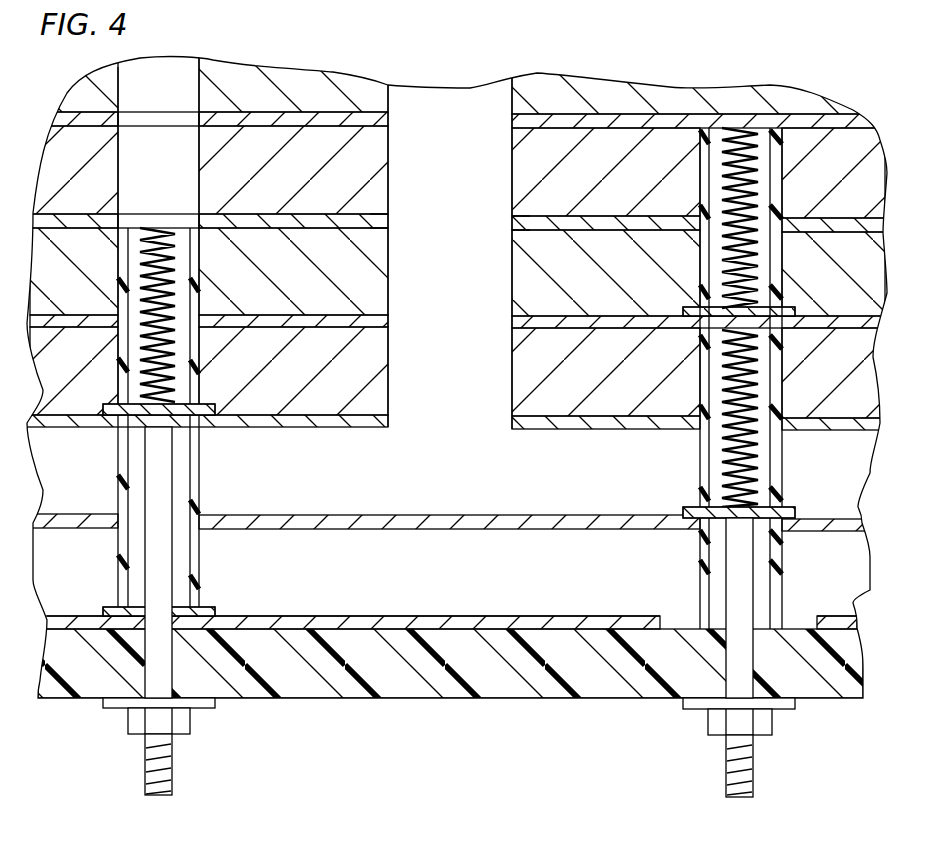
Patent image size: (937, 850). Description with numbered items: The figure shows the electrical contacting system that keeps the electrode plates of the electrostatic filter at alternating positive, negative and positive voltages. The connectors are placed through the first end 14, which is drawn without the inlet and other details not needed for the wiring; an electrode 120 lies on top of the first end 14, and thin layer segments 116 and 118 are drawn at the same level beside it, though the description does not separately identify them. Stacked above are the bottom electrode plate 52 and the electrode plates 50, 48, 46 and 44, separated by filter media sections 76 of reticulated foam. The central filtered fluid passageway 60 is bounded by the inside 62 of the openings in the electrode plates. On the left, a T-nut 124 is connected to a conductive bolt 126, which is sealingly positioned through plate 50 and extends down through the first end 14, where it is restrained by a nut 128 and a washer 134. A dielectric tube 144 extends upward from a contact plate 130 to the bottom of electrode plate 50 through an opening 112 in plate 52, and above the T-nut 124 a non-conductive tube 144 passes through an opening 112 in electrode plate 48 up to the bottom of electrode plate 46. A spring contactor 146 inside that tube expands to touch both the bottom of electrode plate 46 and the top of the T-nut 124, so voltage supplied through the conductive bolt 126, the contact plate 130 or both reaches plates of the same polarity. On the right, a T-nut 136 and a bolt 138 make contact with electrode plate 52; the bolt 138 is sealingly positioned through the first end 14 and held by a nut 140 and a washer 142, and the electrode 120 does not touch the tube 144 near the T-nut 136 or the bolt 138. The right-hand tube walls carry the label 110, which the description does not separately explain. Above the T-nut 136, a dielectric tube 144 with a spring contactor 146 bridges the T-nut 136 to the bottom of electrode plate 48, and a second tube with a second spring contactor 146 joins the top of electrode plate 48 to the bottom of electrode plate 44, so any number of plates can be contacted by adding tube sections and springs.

The first end 14 is at (342, 692).
The electrode plate 44 is at (594, 116).
The electrode plate 46 is at (570, 216).
The electrode plate 48 is at (572, 304).
The electrode plate 50 is at (574, 418).
The bottom electrode plate 52 is at (377, 516).
The filtered fluid passageway 60 is at (463, 278).
The inside of the openings in the electrode plates 62 is at (512, 224).
The filter media sections 76 is at (348, 193).
The sleeve 110 is at (705, 432).
The opening 112 is at (198, 117).
The gasket segment 116 is at (788, 630).
The gasket 118 is at (213, 614).
The electrode 120 is at (353, 620).
The T-nut 124 is at (205, 406).
The conductive bolt 126 is at (148, 473).
The nut 128 is at (135, 720).
The contact plate 130 is at (107, 607).
The washer 134 is at (110, 708).
The T-nut 136 is at (787, 508).
The bolt 138 is at (733, 573).
The nut 140 is at (777, 722).
The washer 142 is at (687, 709).
The dielectric tube 144 is at (118, 260).
The spring contactor 146 is at (142, 355).